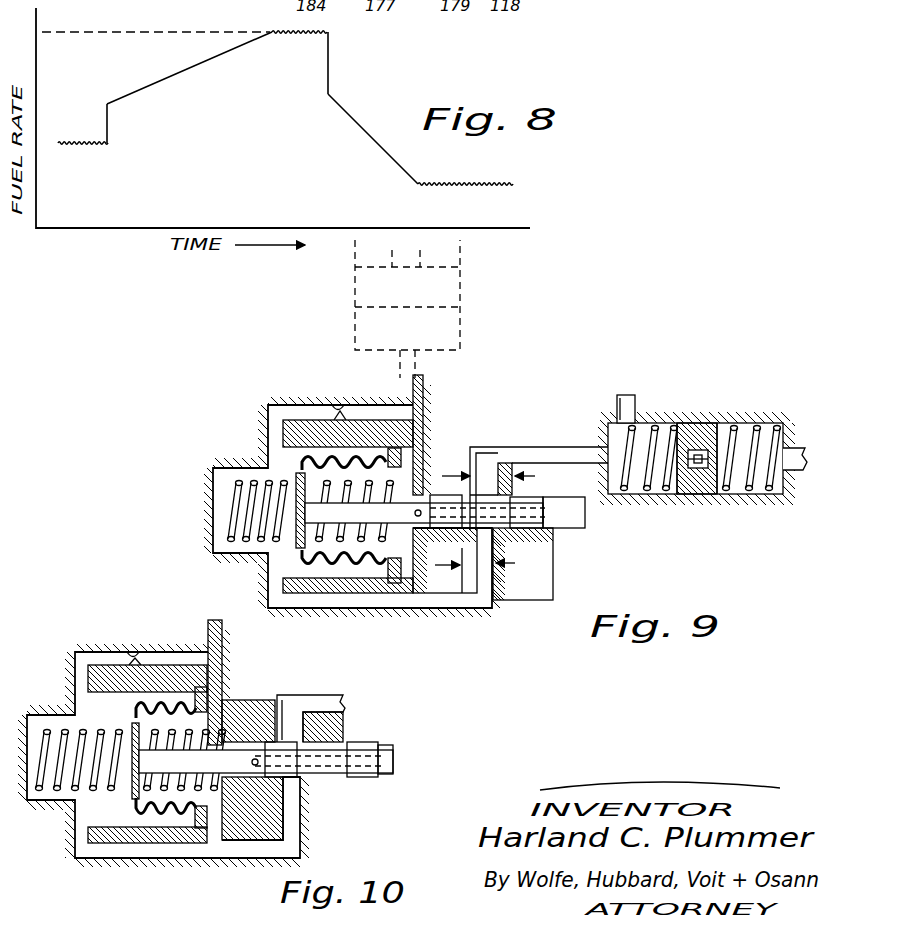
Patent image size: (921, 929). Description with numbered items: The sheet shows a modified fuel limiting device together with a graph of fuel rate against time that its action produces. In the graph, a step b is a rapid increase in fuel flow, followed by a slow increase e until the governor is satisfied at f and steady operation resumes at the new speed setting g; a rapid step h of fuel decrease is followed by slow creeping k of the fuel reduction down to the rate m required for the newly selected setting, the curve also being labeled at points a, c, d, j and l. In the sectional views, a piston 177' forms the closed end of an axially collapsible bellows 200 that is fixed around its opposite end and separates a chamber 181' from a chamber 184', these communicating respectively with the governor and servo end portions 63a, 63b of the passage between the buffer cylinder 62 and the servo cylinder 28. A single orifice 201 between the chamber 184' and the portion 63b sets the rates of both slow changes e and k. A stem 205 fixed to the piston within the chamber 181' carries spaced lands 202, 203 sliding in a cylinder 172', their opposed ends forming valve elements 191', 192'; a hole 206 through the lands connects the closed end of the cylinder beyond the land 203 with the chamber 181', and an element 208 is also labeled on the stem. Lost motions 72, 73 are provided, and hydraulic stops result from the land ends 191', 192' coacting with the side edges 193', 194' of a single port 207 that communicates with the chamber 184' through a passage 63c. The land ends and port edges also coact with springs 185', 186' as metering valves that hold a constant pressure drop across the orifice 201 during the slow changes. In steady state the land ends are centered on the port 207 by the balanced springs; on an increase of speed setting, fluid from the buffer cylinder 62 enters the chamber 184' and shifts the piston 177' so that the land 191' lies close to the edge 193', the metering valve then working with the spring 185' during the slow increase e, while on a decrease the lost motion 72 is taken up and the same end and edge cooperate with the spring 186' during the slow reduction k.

In FIG. 8, the idle fuel rate segment a is at (82, 144).
In FIG. 8, the rapid fuel flow increase b is at (109, 128).
In FIG. 8, the maximum fuel limit c is at (130, 30).
In FIG. 8, the corner point d is at (107, 104).
In FIG. 8, the slow fuel flow increase e is at (167, 78).
In FIG. 8, the newly selected speed point f is at (273, 31).
In FIG. 8, the governor speed setting g is at (299, 40).
In FIG. 8, the rapid fuel decrease step h is at (330, 69).
In FIG. 8, the corner point j is at (327, 94).
In FIG. 8, the slow fuel reduction k is at (361, 129).
In FIG. 8, the corner point l is at (418, 185).
In FIG. 8, the newly selected speed rate m is at (488, 185).
In FIG. 9, the servo cylinder 28 is at (350, 324).
In FIG. 9, the orifice 201 is at (345, 405).
In FIG. 10, the orifice 201 is at (152, 632).
In FIG. 9, the servo end portion of passage 63b is at (418, 385).
In FIG. 9, the piston 177' is at (254, 488).
In FIG. 10, the piston 177' is at (105, 750).
In FIG. 9, the stem 205 is at (348, 433).
In FIG. 10, the stem 205 is at (140, 790).
In FIG. 9, the ring 208 is at (418, 508).
In FIG. 10, the ring 208 is at (256, 757).
In FIG. 9, the port side edge 194' is at (539, 471).
In FIG. 9, the land end valve element 191' is at (451, 480).
In FIG. 10, the land end valve element 191' is at (333, 796).
In FIG. 9, the hole 206 is at (528, 497).
In FIG. 10, the hole 206 is at (380, 760).
In FIG. 9, the governor end portion of passage 63a is at (575, 448).
In FIG. 9, the lost motion 72 is at (445, 476).
In FIG. 9, the land 203 is at (520, 500).
In FIG. 10, the land 203 is at (380, 773).
In FIG. 9, the spring 186' is at (224, 511).
In FIG. 10, the spring 186' is at (65, 785).
In FIG. 9, the chamber 184' is at (230, 568).
In FIG. 9, the land 202 is at (445, 560).
In FIG. 10, the land 202 is at (283, 742).
In FIG. 9, the land end valve element 192' is at (524, 564).
In FIG. 10, the land end valve element 192' is at (344, 718).
In FIG. 9, the cylinder 172' is at (586, 529).
In FIG. 9, the port side edge 193' is at (458, 564).
In FIG. 10, the port side edge 193' is at (268, 795).
In FIG. 9, the lost motion 73 is at (519, 566).
In FIG. 9, the port 207 is at (492, 600).
In FIG. 9, the spring 185' is at (341, 550).
In FIG. 10, the spring 185' is at (203, 746).
In FIG. 9, the bellows 200 is at (350, 565).
In FIG. 9, the chamber 181' is at (449, 617).
In FIG. 9, the passage 63c is at (410, 609).
In FIG. 9, the buffer cylinder 62 is at (640, 485).